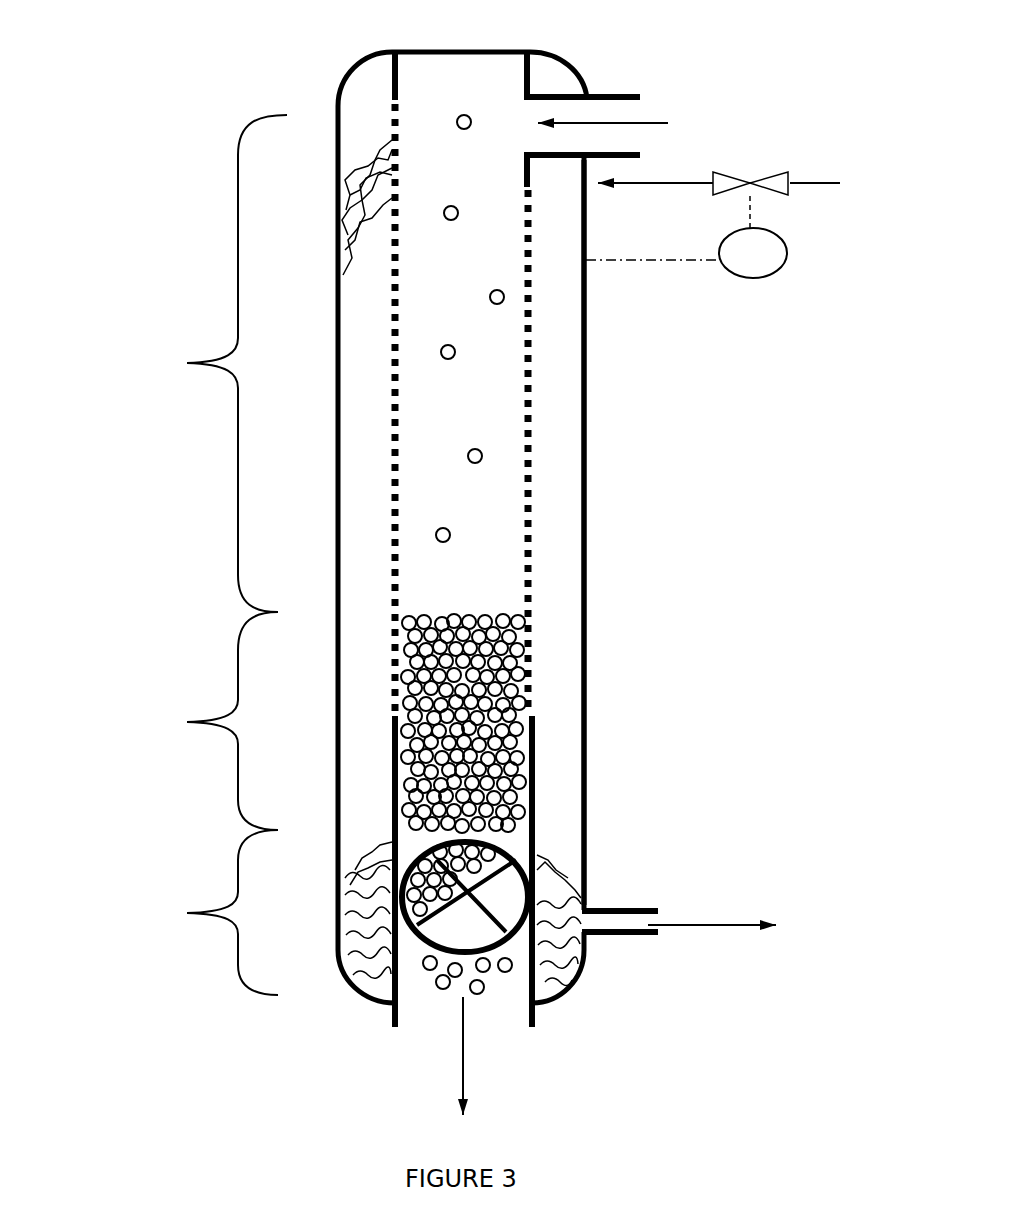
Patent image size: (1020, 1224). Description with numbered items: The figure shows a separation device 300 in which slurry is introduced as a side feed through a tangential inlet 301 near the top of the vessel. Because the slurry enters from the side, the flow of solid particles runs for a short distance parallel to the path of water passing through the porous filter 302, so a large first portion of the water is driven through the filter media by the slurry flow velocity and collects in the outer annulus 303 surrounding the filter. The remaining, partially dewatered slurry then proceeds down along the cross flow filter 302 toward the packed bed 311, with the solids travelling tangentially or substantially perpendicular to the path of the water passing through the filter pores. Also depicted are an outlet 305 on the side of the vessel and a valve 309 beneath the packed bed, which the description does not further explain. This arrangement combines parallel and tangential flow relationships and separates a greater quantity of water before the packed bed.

The separation device 300 is at (480, 558).
The tangential inlet 301 is at (628, 82).
The porous filter 302 is at (530, 438).
The outer annulus 303 is at (552, 463).
The packed bed 311 is at (495, 788).
The liquid outlet 305 is at (630, 905).
The rotary valve 309 is at (447, 952).